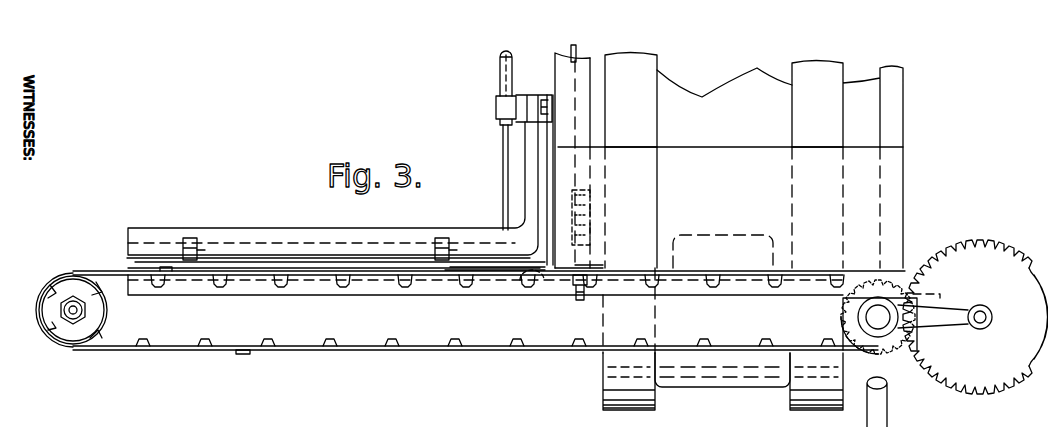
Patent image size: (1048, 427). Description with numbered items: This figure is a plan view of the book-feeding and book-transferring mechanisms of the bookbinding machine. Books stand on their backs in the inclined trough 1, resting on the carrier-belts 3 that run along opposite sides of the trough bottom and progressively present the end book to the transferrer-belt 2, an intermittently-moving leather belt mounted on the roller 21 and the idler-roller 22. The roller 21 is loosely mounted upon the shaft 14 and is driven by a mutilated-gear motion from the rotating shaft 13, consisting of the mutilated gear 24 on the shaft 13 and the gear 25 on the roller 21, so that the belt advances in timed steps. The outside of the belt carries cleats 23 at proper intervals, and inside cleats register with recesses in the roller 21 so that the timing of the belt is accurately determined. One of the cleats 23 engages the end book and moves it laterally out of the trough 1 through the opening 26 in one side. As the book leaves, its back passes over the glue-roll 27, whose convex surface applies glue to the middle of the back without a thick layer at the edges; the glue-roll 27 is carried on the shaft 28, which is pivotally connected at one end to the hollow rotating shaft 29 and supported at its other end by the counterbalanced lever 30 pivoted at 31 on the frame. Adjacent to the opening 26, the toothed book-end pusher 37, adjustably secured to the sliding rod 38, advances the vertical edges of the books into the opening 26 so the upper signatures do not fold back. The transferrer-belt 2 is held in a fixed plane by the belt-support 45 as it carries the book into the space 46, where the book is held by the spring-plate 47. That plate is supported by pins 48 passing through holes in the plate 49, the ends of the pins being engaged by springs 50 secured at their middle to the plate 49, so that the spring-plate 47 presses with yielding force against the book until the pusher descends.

The trough 1 is at (725, 232).
The transferrer-belt 2 is at (140, 350).
The carrier-belts 3 is at (724, 122).
The rotating shaft 13 is at (995, 317).
The shaft 14 is at (915, 325).
The roller 21 is at (843, 340).
The idler-roller 22 is at (108, 321).
The cleats 23 is at (160, 268).
The mutilated gear 24 is at (975, 317).
The gear 25 is at (890, 340).
The opening 26 is at (590, 268).
The glue-roll 27 is at (456, 276).
The shaft 28 is at (503, 193).
The hollow rotating shaft 29 is at (498, 84).
The lever 30 is at (530, 292).
The pivot 31 is at (580, 300).
The book-end pusher 37 is at (581, 250).
The rod 38 is at (588, 53).
The belt-support 45 is at (320, 290).
The space 46 is at (334, 268).
The spring-plate 47 is at (242, 258).
The pins 48 is at (204, 250).
The plate 49 is at (148, 236).
The springs 50 is at (190, 238).